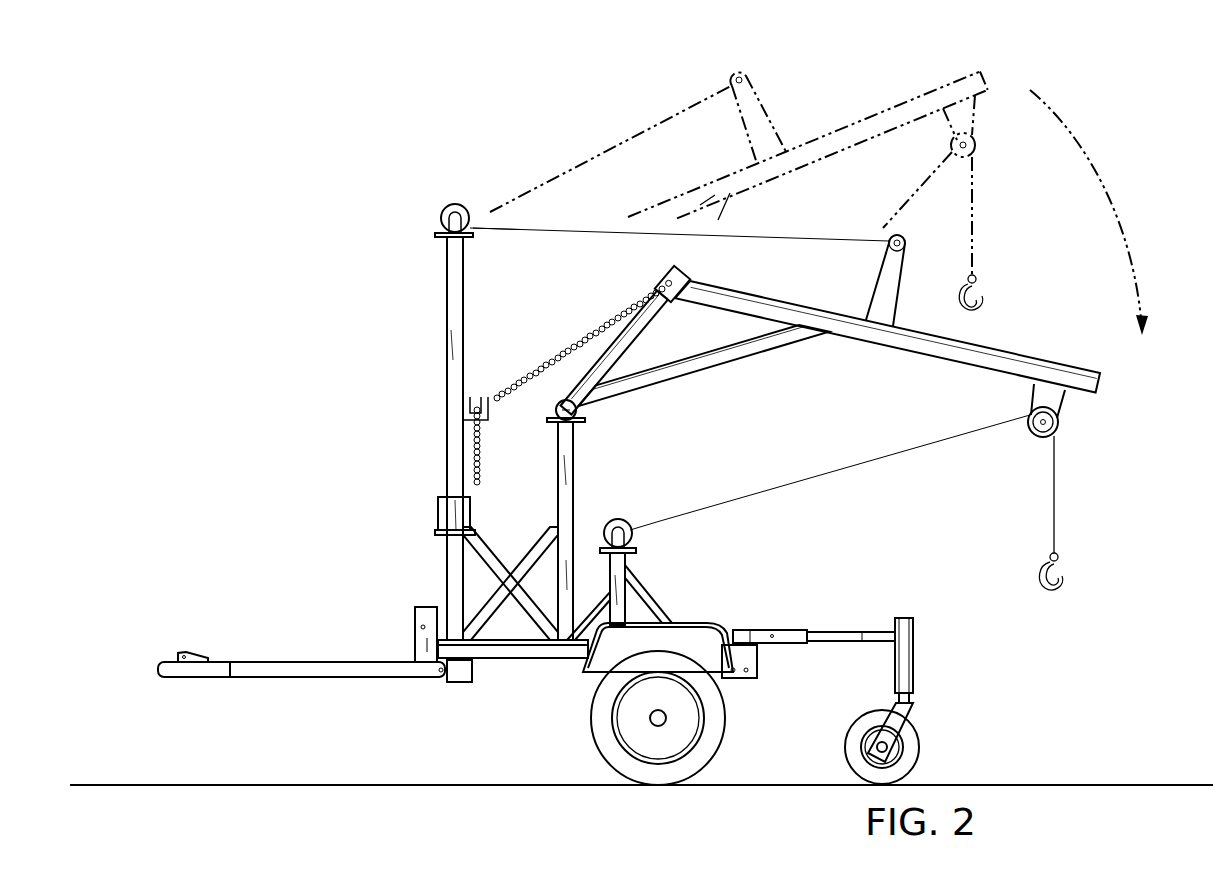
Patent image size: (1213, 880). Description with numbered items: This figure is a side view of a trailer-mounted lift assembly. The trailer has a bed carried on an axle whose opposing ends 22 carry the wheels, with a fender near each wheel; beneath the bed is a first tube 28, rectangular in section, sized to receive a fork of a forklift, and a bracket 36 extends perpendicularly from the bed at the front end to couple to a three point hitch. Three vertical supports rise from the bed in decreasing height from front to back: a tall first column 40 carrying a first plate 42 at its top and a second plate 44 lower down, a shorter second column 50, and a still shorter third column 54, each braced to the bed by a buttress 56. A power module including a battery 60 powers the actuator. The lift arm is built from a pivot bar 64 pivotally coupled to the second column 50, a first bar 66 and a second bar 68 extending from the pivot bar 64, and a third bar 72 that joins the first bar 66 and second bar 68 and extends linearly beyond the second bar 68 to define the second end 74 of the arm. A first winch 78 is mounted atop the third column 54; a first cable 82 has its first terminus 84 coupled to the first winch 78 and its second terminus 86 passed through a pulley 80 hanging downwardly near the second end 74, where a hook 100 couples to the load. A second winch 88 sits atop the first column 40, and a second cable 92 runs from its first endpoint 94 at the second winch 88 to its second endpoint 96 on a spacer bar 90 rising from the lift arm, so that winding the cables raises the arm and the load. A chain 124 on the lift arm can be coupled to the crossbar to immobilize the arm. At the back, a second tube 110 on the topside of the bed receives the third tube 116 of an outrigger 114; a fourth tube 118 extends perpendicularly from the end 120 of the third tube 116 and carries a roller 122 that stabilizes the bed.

The opposing ends 22 is at (648, 718).
The first tube 28 is at (455, 680).
The bracket 36 is at (415, 617).
The first column 40 is at (446, 296).
The first plate 42 is at (403, 167).
The second plate 44 is at (434, 535).
The second column 50 is at (556, 452).
The third column 54 is at (608, 567).
The buttress 56 is at (578, 633).
The battery 60 is at (438, 507).
The pivot bar 64 is at (578, 413).
The first bar 66 is at (659, 324).
The second bar 68 is at (760, 341).
The third bar 72 is at (962, 352).
The second end 74 is at (1107, 380).
The first winch 78 is at (619, 518).
The pulley 80 is at (1062, 423).
The first cable 82 is at (830, 472).
The first terminus 84 is at (638, 528).
The second terminus 86 is at (1057, 518).
The second winch 88 is at (455, 203).
The spacer bar 90 is at (847, 241).
The second cable 92 is at (679, 190).
The first endpoint 94 is at (474, 215).
The second endpoint 96 is at (886, 230).
The hook 100 is at (1071, 572).
The second tube 110 is at (758, 625).
The outrigger 114 is at (912, 675).
The third tube 116 is at (850, 630).
The fourth tube 118 is at (915, 663).
The end 120 is at (908, 632).
The roller 122 is at (922, 742).
The chain 124 is at (537, 361).